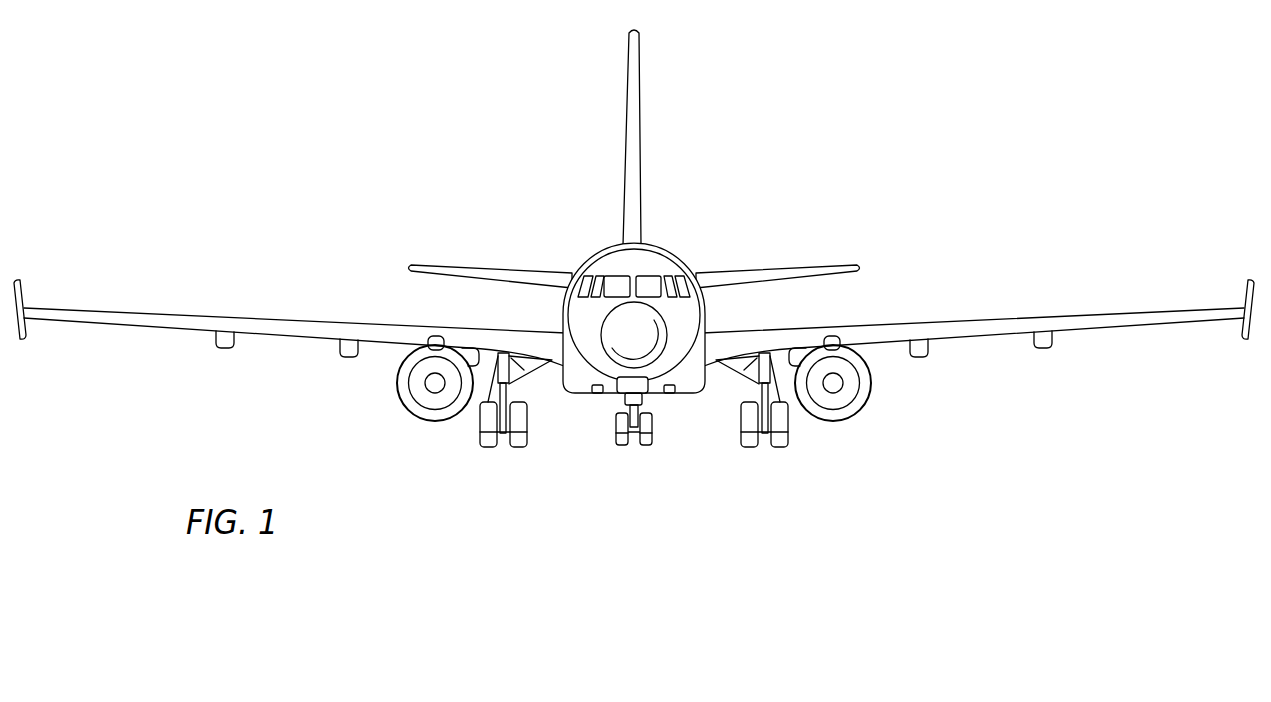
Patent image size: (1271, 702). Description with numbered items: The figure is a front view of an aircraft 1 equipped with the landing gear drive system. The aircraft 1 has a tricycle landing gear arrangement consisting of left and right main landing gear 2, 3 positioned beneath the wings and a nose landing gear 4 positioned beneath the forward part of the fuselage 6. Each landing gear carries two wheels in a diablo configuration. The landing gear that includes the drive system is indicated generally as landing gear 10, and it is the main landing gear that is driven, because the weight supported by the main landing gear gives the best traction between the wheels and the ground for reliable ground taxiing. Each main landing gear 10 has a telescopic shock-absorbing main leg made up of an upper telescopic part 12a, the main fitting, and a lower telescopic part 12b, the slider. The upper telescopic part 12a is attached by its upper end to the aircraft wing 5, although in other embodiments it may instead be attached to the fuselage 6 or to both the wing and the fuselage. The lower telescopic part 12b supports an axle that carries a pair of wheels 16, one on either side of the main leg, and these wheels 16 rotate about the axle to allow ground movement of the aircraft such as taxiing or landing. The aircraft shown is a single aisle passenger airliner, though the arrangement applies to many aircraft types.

The aircraft 1 is at (634, 312).
The left main landing gear 2 is at (725, 445).
The right main landing gear 3 is at (470, 458).
The nose landing gear 4 is at (624, 460).
The aircraft wing 5 is at (897, 334).
The aircraft fuselage 6 is at (590, 360).
The landing gear 10 is at (502, 465).
The upper telescopic part 12a is at (752, 386).
The lower telescopic part 12b is at (776, 396).
The wheels 16 is at (776, 448).